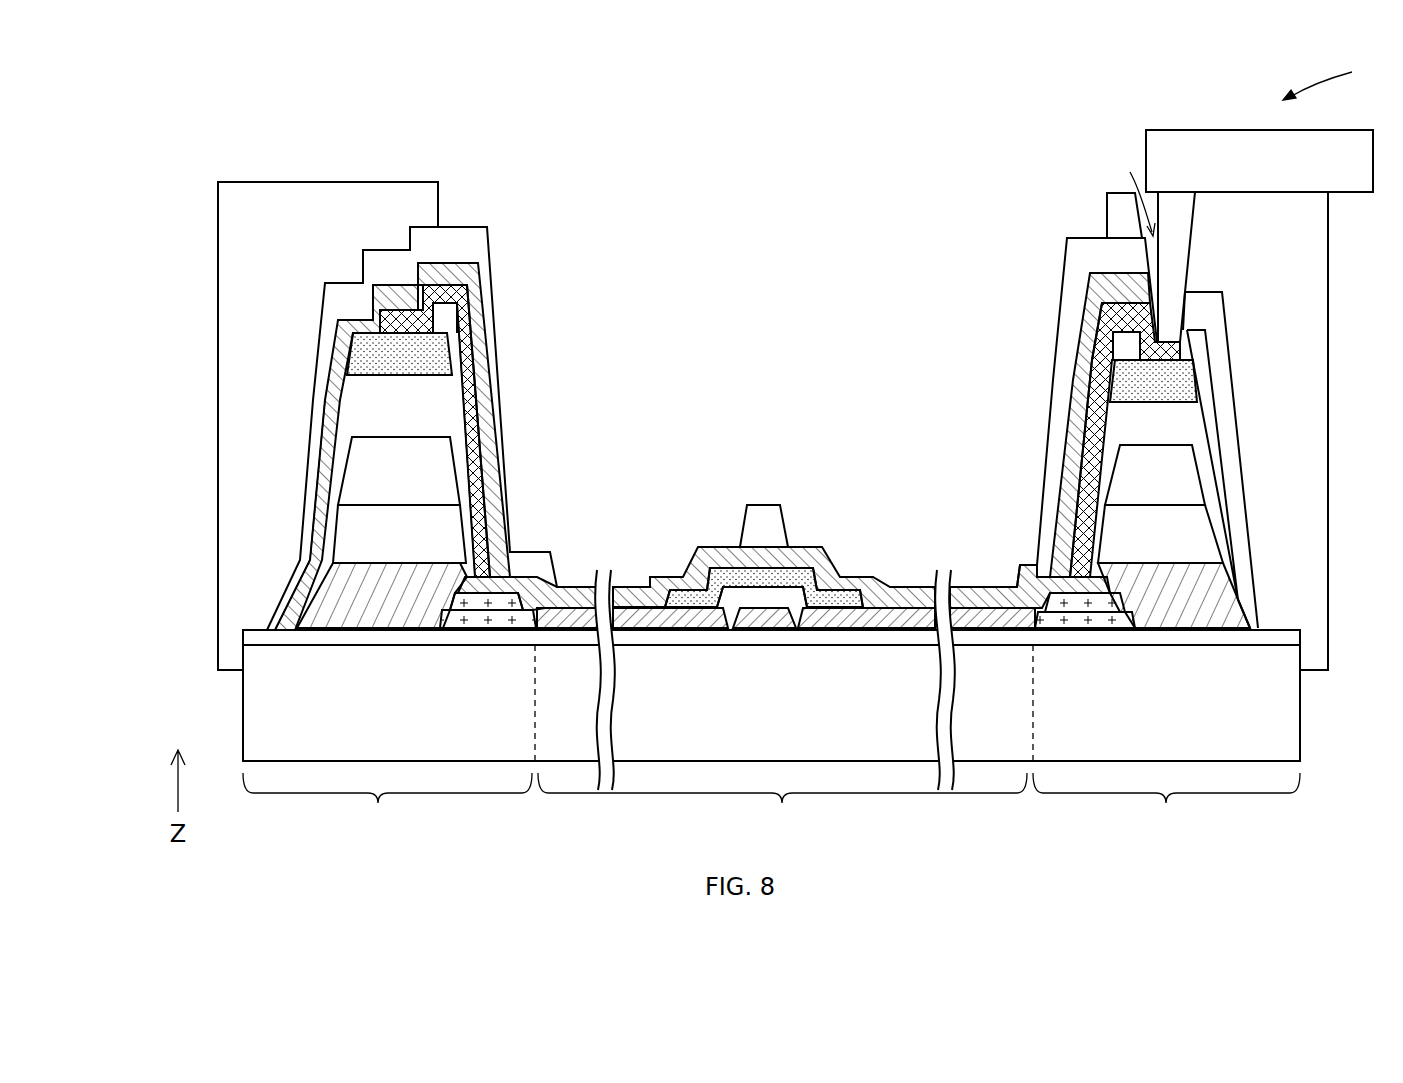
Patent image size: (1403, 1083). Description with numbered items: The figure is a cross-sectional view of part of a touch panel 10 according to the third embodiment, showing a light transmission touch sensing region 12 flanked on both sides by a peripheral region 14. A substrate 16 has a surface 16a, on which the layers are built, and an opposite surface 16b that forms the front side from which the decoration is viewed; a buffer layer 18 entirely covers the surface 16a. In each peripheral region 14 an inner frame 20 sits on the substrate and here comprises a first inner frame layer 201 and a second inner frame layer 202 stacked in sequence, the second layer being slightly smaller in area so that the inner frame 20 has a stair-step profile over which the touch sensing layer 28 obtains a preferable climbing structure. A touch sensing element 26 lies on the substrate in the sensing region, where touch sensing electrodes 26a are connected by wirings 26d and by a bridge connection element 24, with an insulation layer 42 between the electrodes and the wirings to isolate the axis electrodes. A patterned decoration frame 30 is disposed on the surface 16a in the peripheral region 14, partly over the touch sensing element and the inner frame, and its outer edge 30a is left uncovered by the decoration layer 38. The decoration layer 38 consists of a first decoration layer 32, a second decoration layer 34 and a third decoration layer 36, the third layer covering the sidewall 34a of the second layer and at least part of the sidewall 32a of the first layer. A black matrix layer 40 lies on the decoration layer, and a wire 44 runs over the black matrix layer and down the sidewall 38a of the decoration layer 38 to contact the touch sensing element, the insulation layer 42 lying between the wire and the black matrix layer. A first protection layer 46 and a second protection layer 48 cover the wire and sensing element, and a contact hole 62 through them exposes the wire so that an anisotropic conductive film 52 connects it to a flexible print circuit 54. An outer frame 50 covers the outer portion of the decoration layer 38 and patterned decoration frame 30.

The touch panel 10 is at (1335, 76).
The light transmission touch sensing region 12 is at (782, 808).
The peripheral region 14 is at (771, 808).
The substrate 16 is at (1158, 712).
The surface of substrate 16a is at (1255, 648).
The surface of substrate 16b is at (1258, 760).
The buffer layer 18 is at (1290, 638).
The inner frame 20 is at (607, 485).
The first inner frame layer 201 is at (518, 618).
The second inner frame layer 202 is at (503, 598).
The bridge connection element 24 is at (768, 572).
The touch sensing element 26 is at (978, 468).
The touch sensing electrode 26a is at (852, 618).
The wiring 26d is at (740, 598).
The touch sensing layer 28 is at (928, 492).
The patterned decoration frame 30 is at (366, 609).
The outer edge of patterned decoration frame 30a is at (270, 600).
The first decoration layer 32 is at (370, 527).
The sidewall of first decoration layer 32a is at (307, 577).
The second decoration layer 34 is at (370, 470).
The sidewall of second decoration layer 34a is at (457, 465).
The third decoration layer 36 is at (380, 407).
The decoration layer 38 is at (183, 390).
The sidewall of decoration layer 38a is at (470, 393).
The black matrix layer 40 is at (383, 364).
The insulation layer 42 is at (447, 320).
The wire 44 is at (453, 293).
The first protection layer 46 is at (398, 295).
The second protection layer 48 is at (463, 237).
The outer frame 50 is at (258, 284).
The anisotropic conductive film 52 is at (1178, 255).
The flexible print circuit 54 is at (1248, 172).
The contact hole 62 is at (1127, 189).